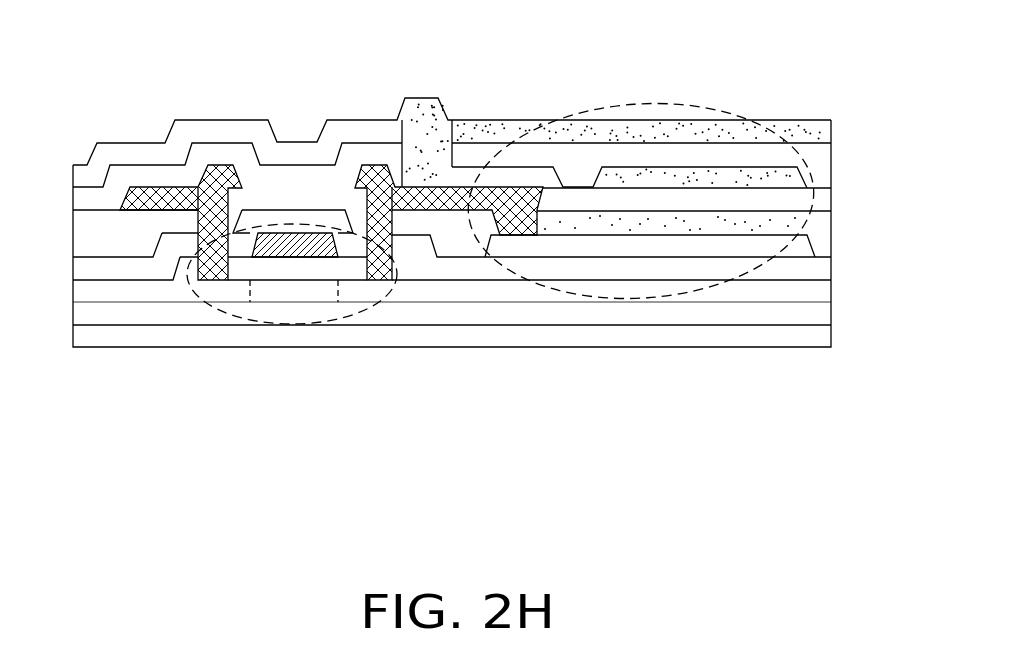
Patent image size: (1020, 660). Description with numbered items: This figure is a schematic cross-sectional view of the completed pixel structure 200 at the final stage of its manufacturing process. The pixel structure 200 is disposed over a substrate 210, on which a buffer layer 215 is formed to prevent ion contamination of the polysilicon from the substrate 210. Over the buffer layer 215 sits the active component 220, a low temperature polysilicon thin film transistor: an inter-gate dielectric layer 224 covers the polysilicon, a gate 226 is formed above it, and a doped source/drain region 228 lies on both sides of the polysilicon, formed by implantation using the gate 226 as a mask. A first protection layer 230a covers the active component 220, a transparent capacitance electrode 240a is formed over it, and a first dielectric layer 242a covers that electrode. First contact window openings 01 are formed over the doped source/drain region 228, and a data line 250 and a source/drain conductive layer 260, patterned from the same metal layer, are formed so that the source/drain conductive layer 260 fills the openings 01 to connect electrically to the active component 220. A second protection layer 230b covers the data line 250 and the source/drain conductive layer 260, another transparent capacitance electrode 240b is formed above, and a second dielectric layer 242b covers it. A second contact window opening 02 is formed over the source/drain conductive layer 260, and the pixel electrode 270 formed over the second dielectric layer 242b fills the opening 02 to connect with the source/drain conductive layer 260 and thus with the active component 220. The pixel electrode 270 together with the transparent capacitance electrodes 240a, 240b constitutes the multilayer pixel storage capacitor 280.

The pixel structure 200 is at (840, 535).
The substrate 210 is at (810, 337).
The buffer layer 215 is at (780, 317).
The active component 220 is at (236, 282).
The inter-gate dielectric layer 224 is at (470, 292).
The gate 226 is at (340, 247).
The doped source/drain region 228 is at (347, 307).
The first protection layer 230a is at (720, 270).
The second protection layer 230b is at (768, 203).
The transparent capacitance electrode 240a is at (620, 248).
The transparent capacitance electrode 240b is at (725, 180).
The first dielectric layer 242a is at (677, 223).
The second dielectric layer 242b is at (640, 160).
The data line 250 is at (162, 200).
The source/drain conductive layer 260 is at (358, 177).
The pixel electrode 270 is at (543, 137).
The multilayer pixel storage capacitor 280 is at (505, 288).
The first contact window openings 01 is at (214, 221).
The second contact window opening 02 is at (417, 128).